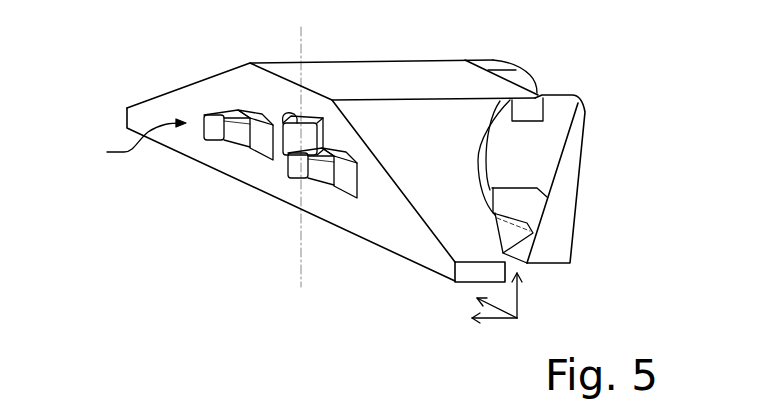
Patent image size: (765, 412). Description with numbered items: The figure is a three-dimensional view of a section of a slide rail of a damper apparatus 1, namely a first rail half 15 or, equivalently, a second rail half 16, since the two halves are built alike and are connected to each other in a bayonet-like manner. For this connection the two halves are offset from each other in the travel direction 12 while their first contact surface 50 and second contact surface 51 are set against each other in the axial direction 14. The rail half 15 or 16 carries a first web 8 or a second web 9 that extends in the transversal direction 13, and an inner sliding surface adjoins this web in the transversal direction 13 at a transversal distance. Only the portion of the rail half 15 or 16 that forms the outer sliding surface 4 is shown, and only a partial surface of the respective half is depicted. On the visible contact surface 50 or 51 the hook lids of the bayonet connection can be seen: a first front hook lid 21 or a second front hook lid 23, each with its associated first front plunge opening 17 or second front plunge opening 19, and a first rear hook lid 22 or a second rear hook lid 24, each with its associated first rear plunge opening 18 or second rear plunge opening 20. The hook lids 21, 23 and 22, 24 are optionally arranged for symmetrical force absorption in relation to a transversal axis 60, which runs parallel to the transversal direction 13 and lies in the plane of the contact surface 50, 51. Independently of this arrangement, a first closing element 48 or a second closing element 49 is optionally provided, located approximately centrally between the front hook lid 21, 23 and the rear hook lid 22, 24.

The damper apparatus 1 is at (587, 131).
The outer sliding surface 4 is at (417, 268).
The first web 8 is at (602, 183).
The second web 9 is at (567, 158).
The travel direction 12 is at (517, 314).
The transversal direction 13 is at (517, 289).
The axial direction 14 is at (488, 321).
The first rail half 15 is at (587, 131).
The second rail half 16 is at (587, 131).
The first front plunge opening 17 is at (349, 218).
The first rear plunge opening 18 is at (222, 176).
The second front plunge opening 19 is at (352, 192).
The second rear plunge opening 20 is at (263, 150).
The first front hook lid 21 is at (278, 210).
The first rear hook lid 22 is at (183, 159).
The second front hook lid 23 is at (299, 178).
The second rear hook lid 24 is at (215, 132).
The first closing element 48 is at (250, 84).
The second closing element 49 is at (292, 115).
The first contact surface 50 is at (110, 141).
The second contact surface 51 is at (110, 141).
The transversal axis 60 is at (301, 43).